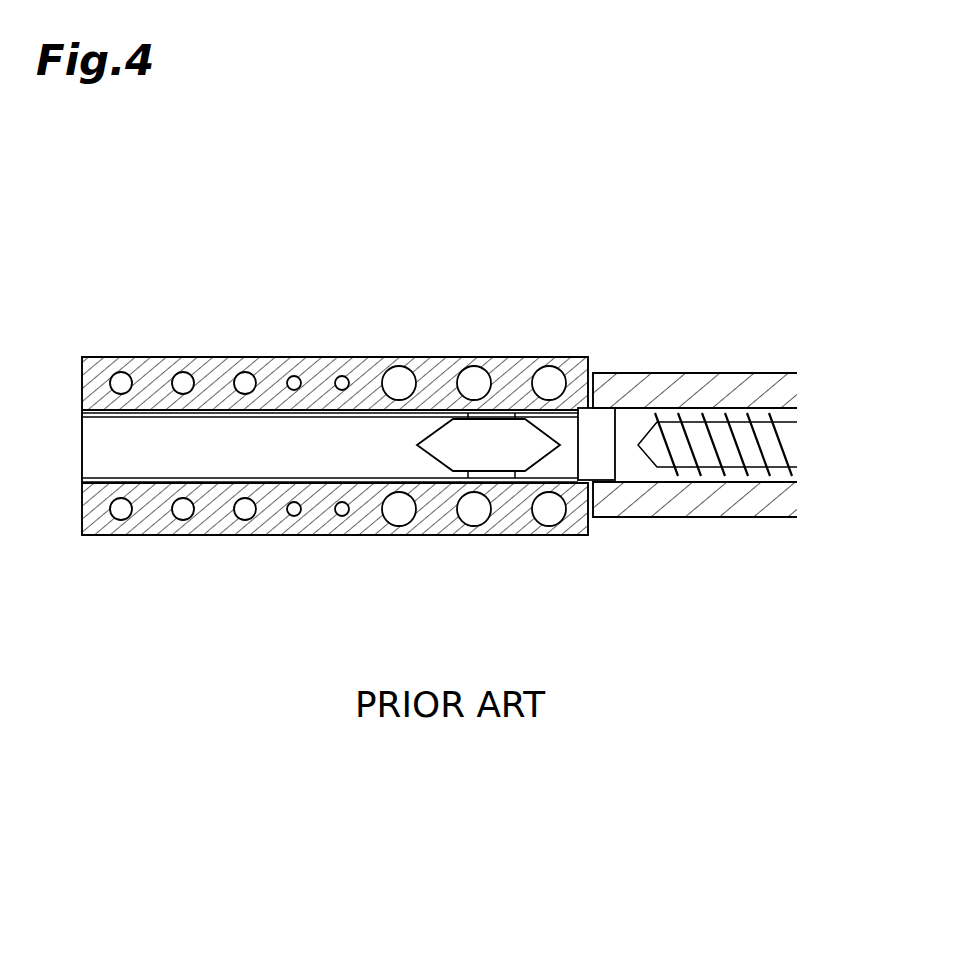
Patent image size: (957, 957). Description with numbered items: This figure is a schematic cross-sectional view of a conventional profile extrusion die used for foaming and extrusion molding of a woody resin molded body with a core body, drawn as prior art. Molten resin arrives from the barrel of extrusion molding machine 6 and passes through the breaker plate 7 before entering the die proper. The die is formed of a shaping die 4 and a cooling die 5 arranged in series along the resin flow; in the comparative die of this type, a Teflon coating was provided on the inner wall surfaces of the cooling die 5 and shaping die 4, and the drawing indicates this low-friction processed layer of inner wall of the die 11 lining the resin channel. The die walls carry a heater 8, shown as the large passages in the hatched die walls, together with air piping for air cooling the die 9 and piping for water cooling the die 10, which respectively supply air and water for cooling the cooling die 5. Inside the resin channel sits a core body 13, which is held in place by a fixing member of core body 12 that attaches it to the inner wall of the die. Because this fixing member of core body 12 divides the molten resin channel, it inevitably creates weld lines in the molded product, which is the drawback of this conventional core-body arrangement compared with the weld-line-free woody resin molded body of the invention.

The shaping die 4 is at (588, 541).
The cooling die 5 is at (368, 541).
The barrel of extrusion molding machine 6 is at (713, 383).
The breaker plate 7 is at (604, 420).
The heater 8 is at (544, 375).
The air piping for air cooling the die 9 is at (341, 380).
The piping for water cooling the die 10 is at (243, 380).
The low-friction processed layer of inner wall of the die 11 is at (110, 480).
The fixing member of core body 12 is at (458, 475).
The core body 13 is at (438, 438).